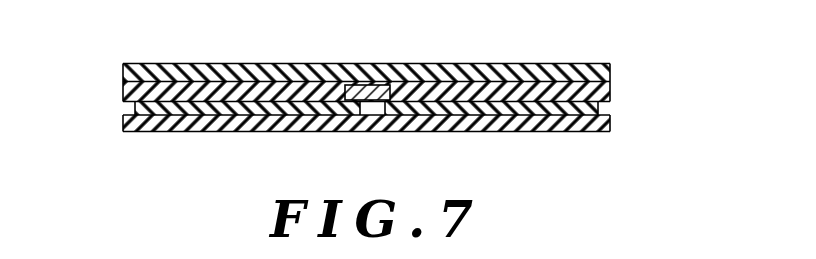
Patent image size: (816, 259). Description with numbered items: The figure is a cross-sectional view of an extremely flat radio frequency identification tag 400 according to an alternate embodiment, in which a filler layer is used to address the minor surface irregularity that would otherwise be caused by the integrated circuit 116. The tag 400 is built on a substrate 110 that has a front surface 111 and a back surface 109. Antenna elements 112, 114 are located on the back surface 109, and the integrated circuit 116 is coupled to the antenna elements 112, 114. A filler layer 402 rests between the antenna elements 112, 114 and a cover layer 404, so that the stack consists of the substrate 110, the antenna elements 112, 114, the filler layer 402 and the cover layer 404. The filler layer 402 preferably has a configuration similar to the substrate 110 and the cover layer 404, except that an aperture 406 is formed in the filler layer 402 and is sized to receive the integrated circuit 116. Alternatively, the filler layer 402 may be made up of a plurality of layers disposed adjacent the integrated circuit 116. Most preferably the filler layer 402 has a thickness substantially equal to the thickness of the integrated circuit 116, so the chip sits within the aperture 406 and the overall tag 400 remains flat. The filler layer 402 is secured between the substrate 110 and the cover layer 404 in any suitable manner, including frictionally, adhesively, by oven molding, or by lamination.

The radio frequency identification tag 400 is at (640, 52).
The filler layer 402 is at (162, 76).
The cover layer 404 is at (521, 85).
The integrated circuit 116 is at (366, 85).
The aperture 406 is at (385, 103).
The back surface 109 is at (119, 109).
The substrate 110 is at (213, 122).
The antenna element 112 is at (580, 105).
The antenna element 114 is at (157, 117).
The front surface 111 is at (266, 137).